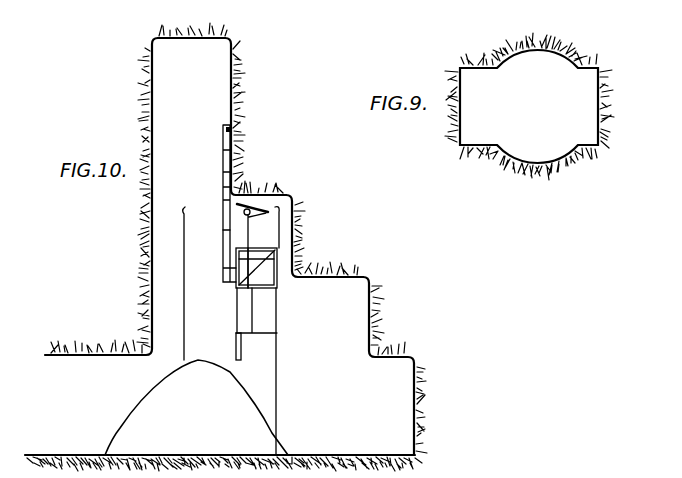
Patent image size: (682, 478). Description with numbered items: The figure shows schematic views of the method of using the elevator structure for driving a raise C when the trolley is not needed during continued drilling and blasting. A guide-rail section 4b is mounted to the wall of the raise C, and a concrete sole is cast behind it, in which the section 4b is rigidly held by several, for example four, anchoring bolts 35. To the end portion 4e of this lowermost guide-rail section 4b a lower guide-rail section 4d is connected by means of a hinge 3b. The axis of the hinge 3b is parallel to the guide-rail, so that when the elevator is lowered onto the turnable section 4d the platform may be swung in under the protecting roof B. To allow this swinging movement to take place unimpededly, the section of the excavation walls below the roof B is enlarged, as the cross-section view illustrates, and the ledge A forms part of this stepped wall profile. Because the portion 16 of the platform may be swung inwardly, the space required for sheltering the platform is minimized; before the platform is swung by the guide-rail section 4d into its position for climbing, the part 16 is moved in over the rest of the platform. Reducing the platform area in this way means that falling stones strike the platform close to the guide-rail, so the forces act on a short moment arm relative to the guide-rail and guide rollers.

The raise C is at (178, 40).
The protecting roof B is at (268, 194).
The lower ledge A is at (340, 276).
The anchoring bolts 35 is at (227, 125).
The guide-rail section 4b is at (222, 146).
The end portion 4e is at (223, 233).
The hinge 3b is at (231, 284).
The portion of the platform 16 is at (275, 286).
The lower guide-rail section 4d is at (236, 344).